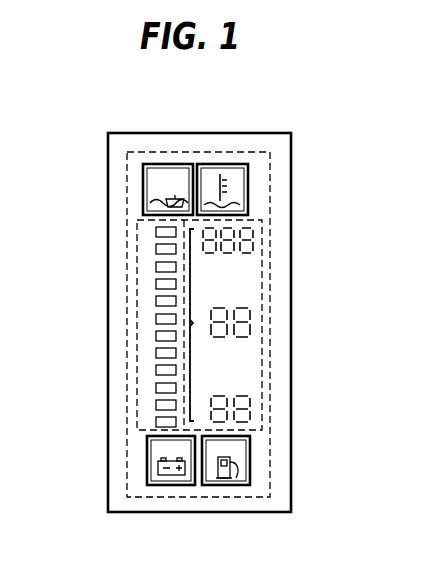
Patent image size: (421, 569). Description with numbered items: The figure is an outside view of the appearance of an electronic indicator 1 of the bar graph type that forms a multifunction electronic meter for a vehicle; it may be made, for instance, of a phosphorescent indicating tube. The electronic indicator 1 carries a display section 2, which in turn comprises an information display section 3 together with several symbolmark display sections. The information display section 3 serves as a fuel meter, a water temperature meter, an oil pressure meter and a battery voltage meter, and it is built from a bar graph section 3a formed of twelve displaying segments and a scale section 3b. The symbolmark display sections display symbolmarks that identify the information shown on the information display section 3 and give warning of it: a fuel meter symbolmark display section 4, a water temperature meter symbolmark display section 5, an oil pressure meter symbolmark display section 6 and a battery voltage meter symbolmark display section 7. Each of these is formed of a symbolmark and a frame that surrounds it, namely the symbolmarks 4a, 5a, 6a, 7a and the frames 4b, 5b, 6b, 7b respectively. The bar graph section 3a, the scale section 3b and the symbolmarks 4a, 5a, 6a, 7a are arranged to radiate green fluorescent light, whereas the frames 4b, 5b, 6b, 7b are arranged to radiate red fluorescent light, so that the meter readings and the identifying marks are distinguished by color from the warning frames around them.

The electronic indicator 1 is at (305, 130).
The display section 2 is at (270, 283).
The information display section 3 is at (138, 347).
The bar graph section 3a is at (155, 267).
The scale section 3b is at (237, 292).
The fuel meter symbolmark display section 4 is at (253, 452).
The fuel meter symbolmark 4a is at (233, 477).
The fuel meter symbolmark frame 4b is at (250, 440).
The water temperature meter symbolmark display section 5 is at (250, 187).
The water temperature meter symbolmark 5a is at (233, 200).
The water temperature meter symbolmark frame 5b is at (233, 164).
The oil pressure meter symbolmark display section 6 is at (143, 187).
The oil pressure meter symbolmark 6a is at (160, 203).
The oil pressure meter symbolmark frame 6b is at (165, 164).
The battery voltage meter symbolmark display section 7 is at (143, 470).
The battery voltage meter symbolmark 7a is at (172, 476).
The battery voltage meter symbolmark frame 7b is at (148, 447).